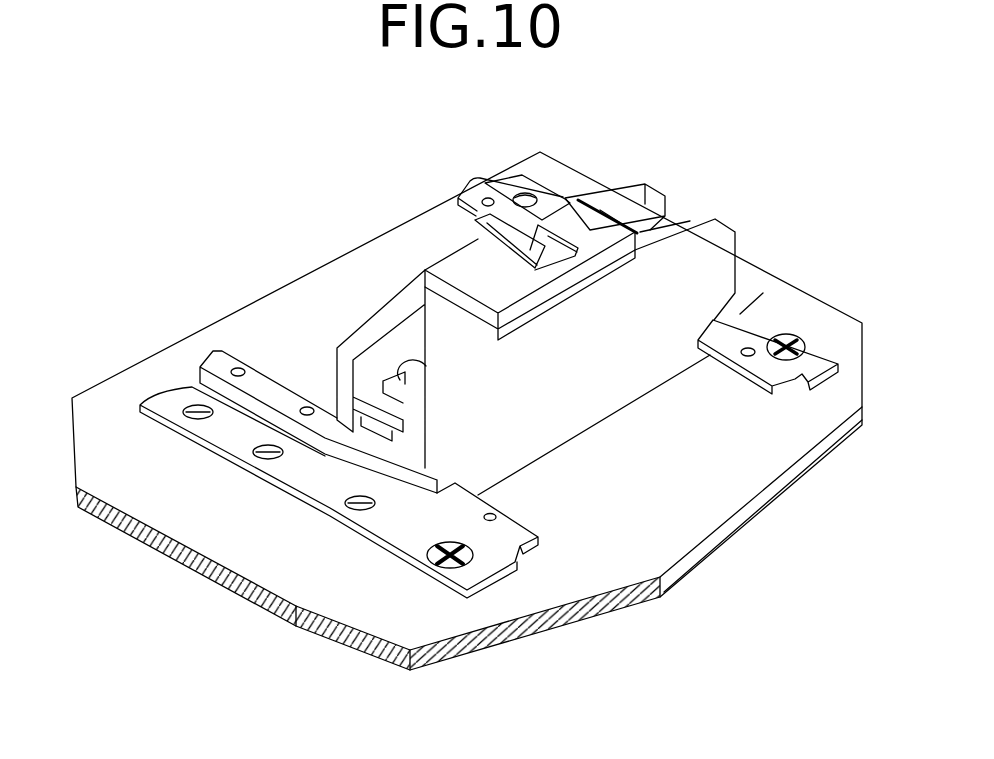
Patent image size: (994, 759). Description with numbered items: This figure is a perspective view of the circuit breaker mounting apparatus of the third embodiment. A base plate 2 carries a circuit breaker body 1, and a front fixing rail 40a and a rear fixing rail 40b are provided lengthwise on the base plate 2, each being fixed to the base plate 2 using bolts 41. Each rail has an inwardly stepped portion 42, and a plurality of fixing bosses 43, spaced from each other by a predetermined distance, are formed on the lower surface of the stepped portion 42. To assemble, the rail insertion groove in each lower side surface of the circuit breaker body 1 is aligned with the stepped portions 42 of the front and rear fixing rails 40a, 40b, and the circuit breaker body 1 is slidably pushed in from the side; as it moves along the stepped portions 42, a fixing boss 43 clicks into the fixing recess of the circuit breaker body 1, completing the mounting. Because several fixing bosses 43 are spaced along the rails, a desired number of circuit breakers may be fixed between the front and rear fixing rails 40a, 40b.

The circuit breaker body 1 is at (412, 258).
The base plate 2 is at (289, 307).
The front fixing rail 40a is at (232, 434).
The rear fixing rail 40b is at (740, 316).
The fixing screw 41 is at (476, 571).
The stepped portion 42 is at (560, 557).
The fixing boss 43 is at (312, 414).